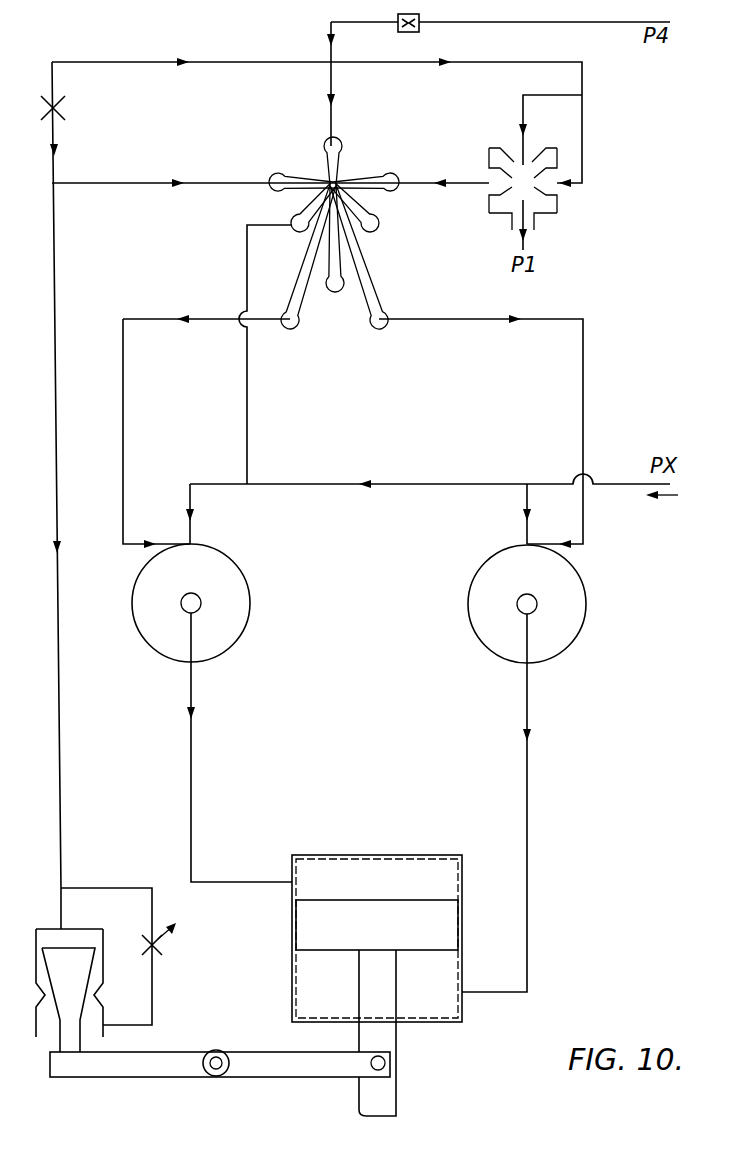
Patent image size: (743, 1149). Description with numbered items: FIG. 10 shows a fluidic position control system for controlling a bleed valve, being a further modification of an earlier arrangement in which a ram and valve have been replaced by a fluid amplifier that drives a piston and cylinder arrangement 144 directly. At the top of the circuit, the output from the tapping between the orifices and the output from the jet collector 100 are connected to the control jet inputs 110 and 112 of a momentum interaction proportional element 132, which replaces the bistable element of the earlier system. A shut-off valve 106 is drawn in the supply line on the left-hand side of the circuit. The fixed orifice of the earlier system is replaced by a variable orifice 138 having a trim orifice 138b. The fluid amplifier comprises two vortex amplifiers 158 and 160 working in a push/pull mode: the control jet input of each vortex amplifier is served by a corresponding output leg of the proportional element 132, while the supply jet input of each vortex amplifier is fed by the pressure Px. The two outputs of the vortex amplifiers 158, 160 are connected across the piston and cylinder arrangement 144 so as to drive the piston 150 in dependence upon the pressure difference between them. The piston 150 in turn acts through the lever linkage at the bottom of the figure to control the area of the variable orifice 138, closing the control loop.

The jet collector 100 is at (585, 197).
The shut-off valve 106 is at (68, 107).
The control jet input 110 is at (273, 175).
The control jet input 112 is at (393, 174).
The momentum interaction proportional element 132 is at (335, 233).
The variable orifice 138 is at (31, 946).
The trim orifice 138b is at (160, 950).
The piston and cylinder arrangement 144 is at (404, 985).
The piston 150 is at (445, 922).
The vortex amplifier 158 is at (255, 565).
The vortex amplifier 160 is at (597, 579).